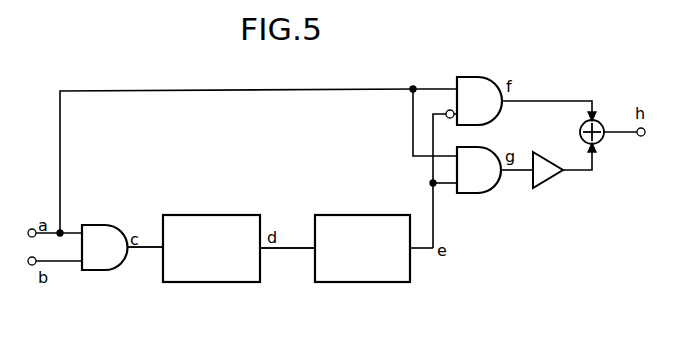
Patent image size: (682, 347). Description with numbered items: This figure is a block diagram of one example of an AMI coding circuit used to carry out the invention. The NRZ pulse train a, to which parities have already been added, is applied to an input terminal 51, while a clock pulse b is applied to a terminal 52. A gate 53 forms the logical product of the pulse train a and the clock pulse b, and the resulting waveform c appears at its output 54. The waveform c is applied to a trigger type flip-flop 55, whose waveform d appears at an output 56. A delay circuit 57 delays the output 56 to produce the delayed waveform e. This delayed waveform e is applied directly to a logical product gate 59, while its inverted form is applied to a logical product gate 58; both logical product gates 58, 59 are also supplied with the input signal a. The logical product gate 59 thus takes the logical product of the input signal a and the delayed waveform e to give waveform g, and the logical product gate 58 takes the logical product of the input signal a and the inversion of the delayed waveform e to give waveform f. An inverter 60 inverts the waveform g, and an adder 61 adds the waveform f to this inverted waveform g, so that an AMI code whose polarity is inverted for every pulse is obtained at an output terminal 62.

The input terminal 51 is at (32, 229).
The terminal 52 is at (32, 265).
The gate 53 is at (102, 225).
The output 54 is at (145, 252).
The trigger type flip-flop 55 is at (210, 215).
The output 56 is at (283, 253).
The delay circuit 57 is at (358, 215).
The logical product gate 58 is at (487, 83).
The logical product gate 59 is at (482, 195).
The inverter 60 is at (543, 188).
The adder 61 is at (600, 142).
The output terminal 62 is at (641, 136).